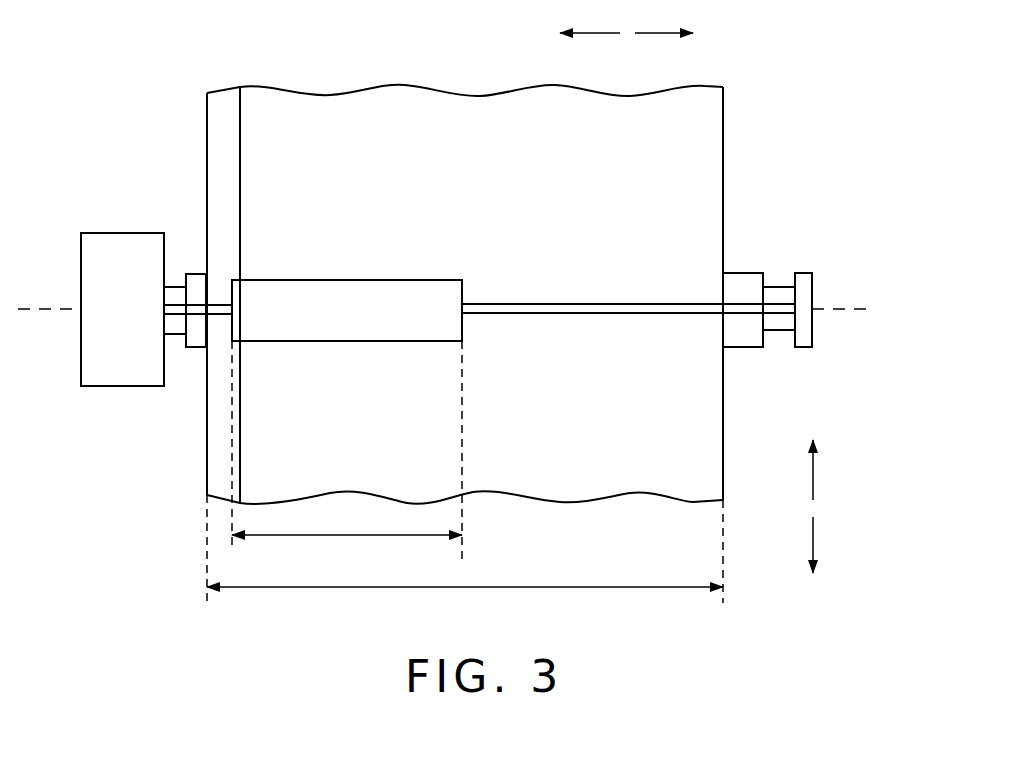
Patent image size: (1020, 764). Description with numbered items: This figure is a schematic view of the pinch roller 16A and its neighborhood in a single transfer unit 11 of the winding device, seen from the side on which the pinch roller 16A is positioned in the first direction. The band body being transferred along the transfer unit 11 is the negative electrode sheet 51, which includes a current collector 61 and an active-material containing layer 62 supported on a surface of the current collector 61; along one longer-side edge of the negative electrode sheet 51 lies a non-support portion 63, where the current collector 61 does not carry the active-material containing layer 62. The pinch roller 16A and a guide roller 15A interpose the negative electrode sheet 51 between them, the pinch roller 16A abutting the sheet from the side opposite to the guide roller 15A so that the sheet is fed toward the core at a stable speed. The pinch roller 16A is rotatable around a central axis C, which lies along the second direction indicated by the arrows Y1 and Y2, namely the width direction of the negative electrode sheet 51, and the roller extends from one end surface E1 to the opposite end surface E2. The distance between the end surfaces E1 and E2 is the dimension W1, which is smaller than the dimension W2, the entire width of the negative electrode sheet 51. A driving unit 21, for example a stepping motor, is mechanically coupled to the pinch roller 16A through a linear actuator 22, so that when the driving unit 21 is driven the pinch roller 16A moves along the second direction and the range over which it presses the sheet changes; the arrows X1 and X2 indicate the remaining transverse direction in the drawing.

The transfer unit 11 is at (772, 138).
The guide roller 15A is at (748, 338).
The pinch roller 16A is at (342, 333).
The driving unit 21 is at (122, 386).
The linear actuator 22 is at (604, 303).
The negative electrode sheet 51 is at (422, 106).
The current collector 61 is at (212, 122).
The active-material containing layer 62 is at (297, 106).
The non-support portion 63 is at (212, 160).
The end surface E1 is at (230, 295).
The end surface E2 is at (462, 287).
The central axis C is at (28, 310).
The dimension of the pinch roller W1 is at (347, 550).
The dimension of the band body W2 is at (465, 602).
The direction X1 is at (833, 545).
The direction X2 is at (833, 470).
The arrow Y1 is at (590, 21).
The arrow Y2 is at (664, 21).